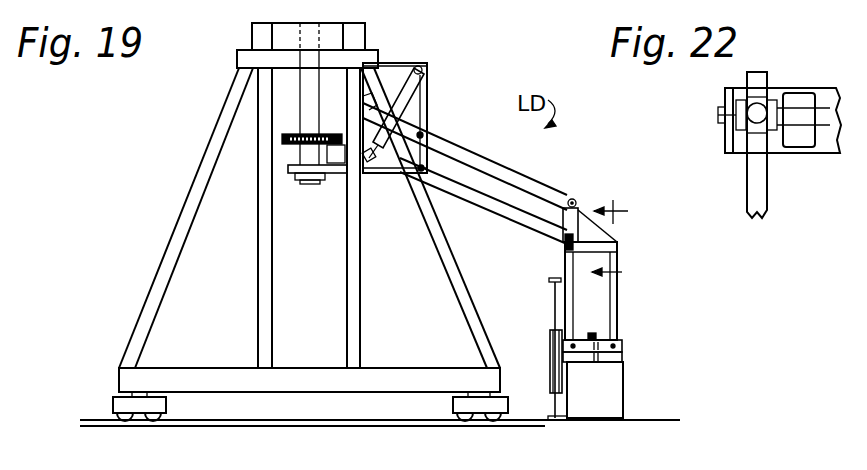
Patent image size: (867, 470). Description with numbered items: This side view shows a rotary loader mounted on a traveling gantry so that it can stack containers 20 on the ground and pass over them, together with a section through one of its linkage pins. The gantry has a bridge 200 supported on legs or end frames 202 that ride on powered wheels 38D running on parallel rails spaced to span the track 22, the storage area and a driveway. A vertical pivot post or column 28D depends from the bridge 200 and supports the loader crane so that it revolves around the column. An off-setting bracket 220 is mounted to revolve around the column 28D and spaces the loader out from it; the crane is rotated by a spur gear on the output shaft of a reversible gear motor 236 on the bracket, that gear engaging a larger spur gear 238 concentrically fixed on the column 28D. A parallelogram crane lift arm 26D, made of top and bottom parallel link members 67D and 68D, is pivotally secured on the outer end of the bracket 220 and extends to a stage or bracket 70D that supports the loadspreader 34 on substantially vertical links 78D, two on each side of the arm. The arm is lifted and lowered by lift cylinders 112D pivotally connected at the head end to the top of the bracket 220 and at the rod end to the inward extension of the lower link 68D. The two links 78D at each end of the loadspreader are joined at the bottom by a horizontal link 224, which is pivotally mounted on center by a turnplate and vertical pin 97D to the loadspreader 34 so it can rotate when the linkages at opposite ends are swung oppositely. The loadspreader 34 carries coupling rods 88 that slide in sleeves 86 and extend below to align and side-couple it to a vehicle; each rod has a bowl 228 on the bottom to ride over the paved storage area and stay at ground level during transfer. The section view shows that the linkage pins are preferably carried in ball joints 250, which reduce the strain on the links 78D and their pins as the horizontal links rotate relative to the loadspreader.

In FIG. 19, the bridge 200 is at (252, 36).
In FIG. 19, the legs or end frames 202 is at (158, 268).
In FIG. 19, the powered wheels 38D is at (113, 420).
In FIG. 19, the off-setting bracket 220 is at (429, 92).
In FIG. 19, the lift cylinders 112D is at (425, 78).
In FIG. 19, the parallelogram crane lift arm 26D is at (476, 176).
In FIG. 19, the top link member 67D is at (457, 147).
In FIG. 19, the lower link member 68D is at (537, 229).
In FIG. 19, the stage or bracket 70D is at (578, 208).
In FIG. 19, the track 22 is at (624, 238).
In FIG. 19, the substantially vertical links 78D is at (574, 308).
In FIG. 22, the substantially vertical links 78D is at (767, 204).
In FIG. 19, the turnplate and vertical pin 97D is at (595, 336).
In FIG. 19, the horizontal link 224 is at (623, 342).
In FIG. 19, the loadspreader 34 is at (623, 354).
In FIG. 19, the container 20 is at (623, 396).
In FIG. 19, the coupling rods 88 is at (548, 288).
In FIG. 19, the sleeves 86 is at (550, 345).
In FIG. 19, the bowl 228 is at (553, 422).
In FIG. 19, the larger spur gear 238 is at (283, 148).
In FIG. 19, the reversible gear motor 236 is at (336, 166).
In FIG. 19, the vertical pivot post or column 28D is at (305, 182).
In FIG. 22, the ball joints 250 is at (752, 140).